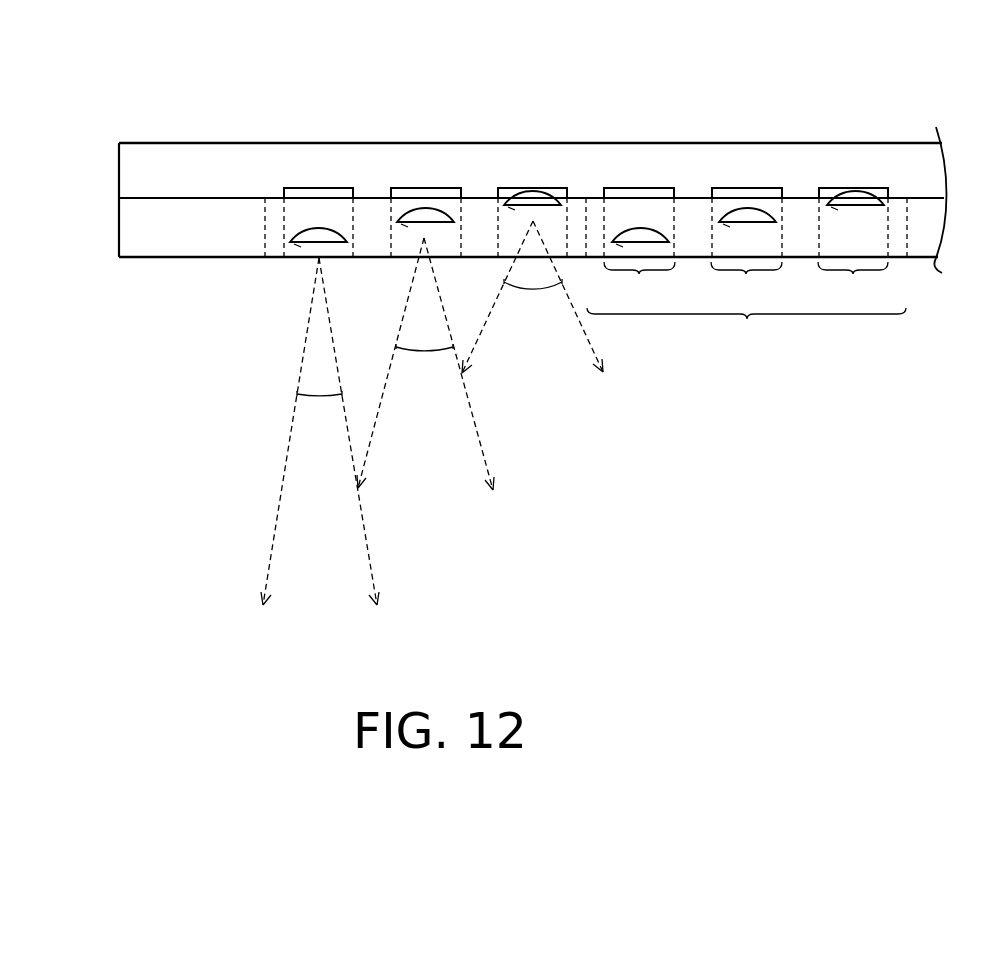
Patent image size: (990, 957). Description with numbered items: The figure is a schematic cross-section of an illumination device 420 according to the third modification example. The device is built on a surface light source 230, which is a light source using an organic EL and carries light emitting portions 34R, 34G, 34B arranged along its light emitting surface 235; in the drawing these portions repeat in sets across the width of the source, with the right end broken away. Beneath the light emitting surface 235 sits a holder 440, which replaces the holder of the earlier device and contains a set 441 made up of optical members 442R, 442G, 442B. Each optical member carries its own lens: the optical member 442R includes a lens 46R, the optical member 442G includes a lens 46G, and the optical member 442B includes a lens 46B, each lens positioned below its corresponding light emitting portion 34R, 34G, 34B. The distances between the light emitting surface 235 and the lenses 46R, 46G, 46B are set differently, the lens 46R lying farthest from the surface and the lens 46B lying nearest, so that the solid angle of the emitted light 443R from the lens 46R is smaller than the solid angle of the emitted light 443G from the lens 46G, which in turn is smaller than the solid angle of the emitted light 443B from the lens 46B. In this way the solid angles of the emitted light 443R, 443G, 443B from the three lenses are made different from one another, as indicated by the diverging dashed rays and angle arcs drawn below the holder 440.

The illumination device 420 is at (64, 93).
The surface light source 230 is at (127, 161).
The light emitting surface 235 is at (141, 199).
The holder 440 is at (127, 229).
The light emitting portion 34R is at (325, 190).
The light emitting portion 34G is at (430, 190).
The light emitting portion 34B is at (533, 190).
The lens 46R is at (297, 243).
The lens 46G is at (402, 225).
The lens 46B is at (505, 207).
The optical member 442R is at (639, 282).
The optical member 442G is at (746, 282).
The optical member 442B is at (853, 282).
The set 441 is at (746, 328).
The emitted light 443R is at (272, 538).
The emitted light 443G is at (488, 462).
The emitted light 443B is at (592, 350).